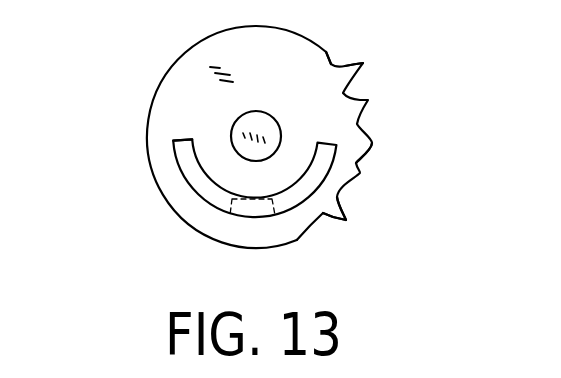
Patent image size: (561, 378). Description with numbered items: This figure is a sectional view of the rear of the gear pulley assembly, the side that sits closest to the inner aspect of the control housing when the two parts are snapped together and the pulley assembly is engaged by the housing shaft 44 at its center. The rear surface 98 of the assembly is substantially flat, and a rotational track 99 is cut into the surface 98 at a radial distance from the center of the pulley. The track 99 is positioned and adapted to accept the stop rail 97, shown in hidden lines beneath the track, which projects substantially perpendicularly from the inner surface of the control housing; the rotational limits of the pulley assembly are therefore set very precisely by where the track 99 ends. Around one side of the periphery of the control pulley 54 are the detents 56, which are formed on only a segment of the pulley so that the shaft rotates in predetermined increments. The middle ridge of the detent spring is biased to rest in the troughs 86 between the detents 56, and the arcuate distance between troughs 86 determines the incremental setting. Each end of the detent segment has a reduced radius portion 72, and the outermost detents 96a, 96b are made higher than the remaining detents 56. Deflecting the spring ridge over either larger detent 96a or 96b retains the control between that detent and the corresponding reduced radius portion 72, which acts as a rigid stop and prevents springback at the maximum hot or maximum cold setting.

The housing shaft 44 is at (252, 123).
The control pulley 54 is at (295, 225).
The detents 56 is at (368, 101).
The reduced radius portions 72 is at (331, 64).
The troughs 86 is at (358, 160).
The outermost detent 96a is at (363, 63).
The outermost detent 96b is at (346, 220).
The stop rail 97 is at (252, 206).
The rear surface 98 is at (168, 119).
The rotational track 99 is at (183, 143).